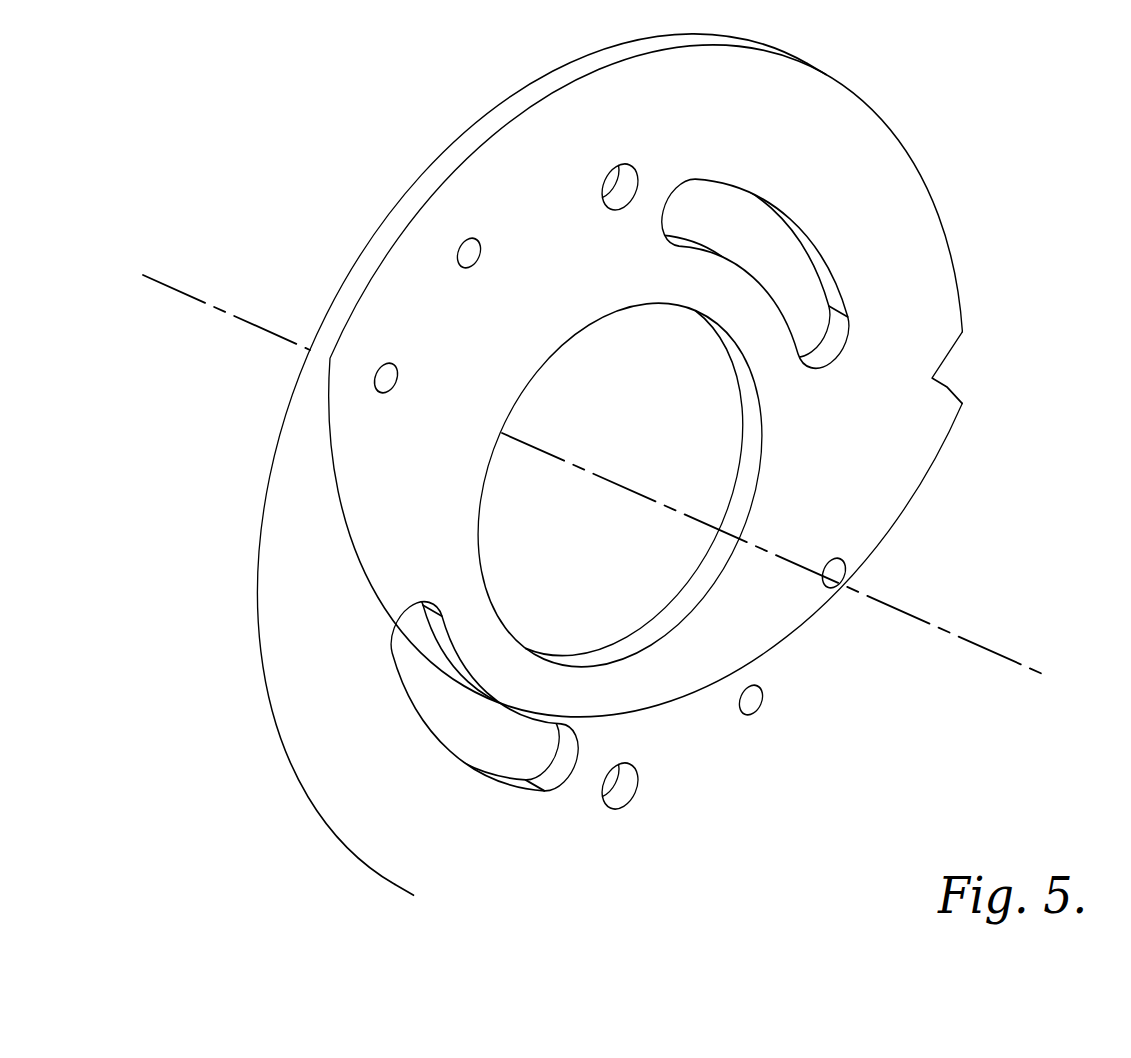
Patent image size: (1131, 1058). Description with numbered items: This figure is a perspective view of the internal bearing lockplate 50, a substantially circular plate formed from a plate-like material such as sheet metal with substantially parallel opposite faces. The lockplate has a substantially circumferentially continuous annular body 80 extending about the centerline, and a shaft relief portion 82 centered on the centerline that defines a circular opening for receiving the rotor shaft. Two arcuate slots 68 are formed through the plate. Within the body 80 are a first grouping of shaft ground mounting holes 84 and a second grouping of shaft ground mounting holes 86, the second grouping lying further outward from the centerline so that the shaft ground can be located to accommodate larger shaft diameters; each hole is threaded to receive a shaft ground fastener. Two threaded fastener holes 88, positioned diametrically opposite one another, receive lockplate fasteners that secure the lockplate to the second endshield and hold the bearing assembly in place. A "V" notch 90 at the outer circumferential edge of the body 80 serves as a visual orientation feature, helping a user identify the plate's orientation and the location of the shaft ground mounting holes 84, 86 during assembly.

The internal bearing lockplate 50 is at (984, 149).
The annular body 80 is at (840, 81).
The shaft relief portion 82 is at (764, 440).
The shaft ground mounting holes 84 is at (829, 587).
The shaft ground mounting holes 86 is at (469, 268).
The fastener holes 88 is at (622, 177).
The arcuate slots 68 is at (786, 216).
The "V" notch 90 is at (947, 387).